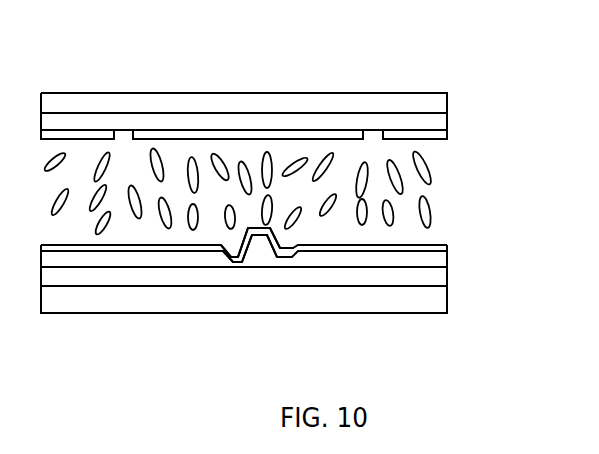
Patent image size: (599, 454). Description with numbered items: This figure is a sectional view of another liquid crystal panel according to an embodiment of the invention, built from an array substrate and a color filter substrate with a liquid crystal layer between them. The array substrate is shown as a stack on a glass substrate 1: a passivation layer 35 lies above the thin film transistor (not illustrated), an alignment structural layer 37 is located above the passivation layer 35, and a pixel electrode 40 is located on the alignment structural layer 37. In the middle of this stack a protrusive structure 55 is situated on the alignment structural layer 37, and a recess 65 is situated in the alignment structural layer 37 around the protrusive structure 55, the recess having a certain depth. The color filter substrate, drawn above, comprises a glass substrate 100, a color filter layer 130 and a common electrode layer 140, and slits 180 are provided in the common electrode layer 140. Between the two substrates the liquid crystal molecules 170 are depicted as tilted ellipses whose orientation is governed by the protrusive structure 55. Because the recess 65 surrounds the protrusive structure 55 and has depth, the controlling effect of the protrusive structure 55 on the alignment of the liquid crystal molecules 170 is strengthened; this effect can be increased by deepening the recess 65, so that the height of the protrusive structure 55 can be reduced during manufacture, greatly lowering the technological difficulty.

The glass substrate 1 is at (438, 297).
The passivation layer 35 is at (447, 278).
The alignment structural layer 37 is at (447, 258).
The pixel electrode 40 is at (447, 246).
The protrusive structure 55 is at (265, 260).
The recess 65 is at (233, 260).
The glass substrate 100 is at (447, 97).
The color filter layer 130 is at (447, 118).
The common electrode layer 140 is at (447, 137).
The liquid crystal molecules 170 is at (425, 173).
The slits 180 is at (122, 136).